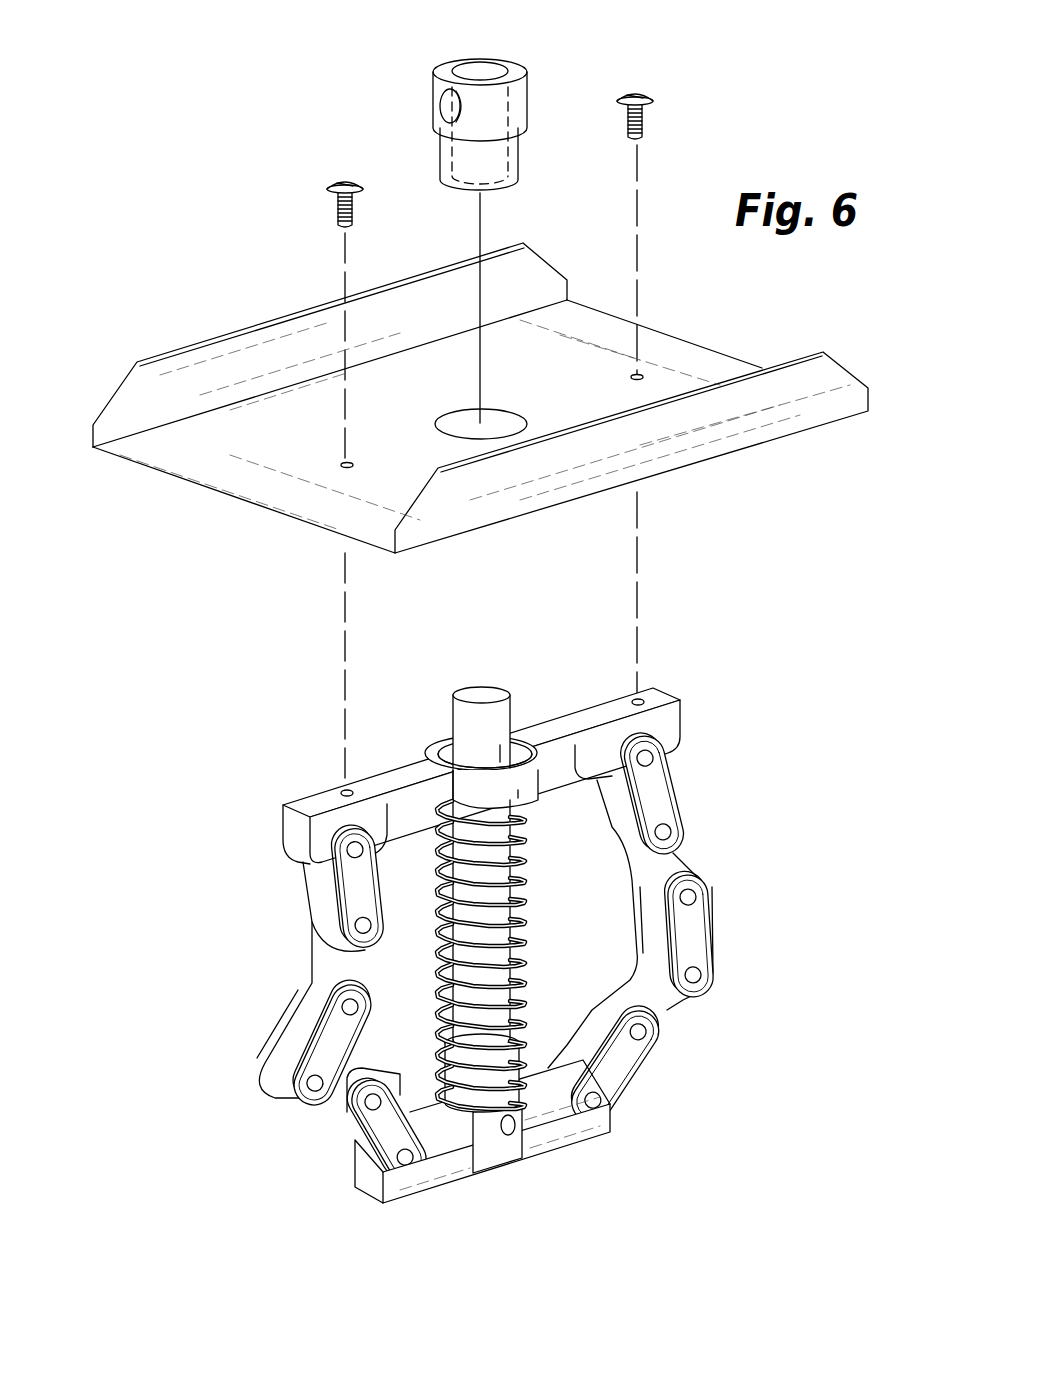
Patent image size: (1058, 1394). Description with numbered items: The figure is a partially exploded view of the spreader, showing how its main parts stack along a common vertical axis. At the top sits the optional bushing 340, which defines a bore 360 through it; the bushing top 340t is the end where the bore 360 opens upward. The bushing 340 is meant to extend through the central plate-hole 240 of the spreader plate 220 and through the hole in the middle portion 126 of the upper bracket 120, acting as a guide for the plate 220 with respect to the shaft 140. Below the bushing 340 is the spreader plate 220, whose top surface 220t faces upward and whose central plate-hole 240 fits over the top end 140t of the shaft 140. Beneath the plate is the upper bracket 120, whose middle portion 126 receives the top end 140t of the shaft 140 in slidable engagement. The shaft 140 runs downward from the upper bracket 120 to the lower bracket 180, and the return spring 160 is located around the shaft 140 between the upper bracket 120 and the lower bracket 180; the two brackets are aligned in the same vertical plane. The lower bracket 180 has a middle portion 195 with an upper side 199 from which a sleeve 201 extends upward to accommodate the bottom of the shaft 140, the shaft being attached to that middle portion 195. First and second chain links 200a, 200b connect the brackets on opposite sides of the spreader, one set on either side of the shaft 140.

The upper bracket 120 is at (293, 823).
The middle portion of the upper bracket 126 is at (528, 770).
The shaft 140 is at (483, 848).
The top end of the shaft 140t is at (462, 730).
The return spring 160 is at (524, 905).
The lower bracket 180 is at (549, 1133).
The middle portion of the lower bracket 195 is at (598, 1155).
The upper side of the middle portion 199 is at (500, 1105).
The first chain link 200a is at (713, 880).
The second chain link 200b is at (300, 990).
The sleeve 201 is at (455, 1083).
The spreader plate 220 is at (475, 398).
The top surface of the spreader plate 220t is at (438, 395).
The central plate-hole 240 is at (505, 428).
The bushing 340 is at (458, 111).
The bushing top 340t is at (433, 80).
The bore 360 is at (482, 72).